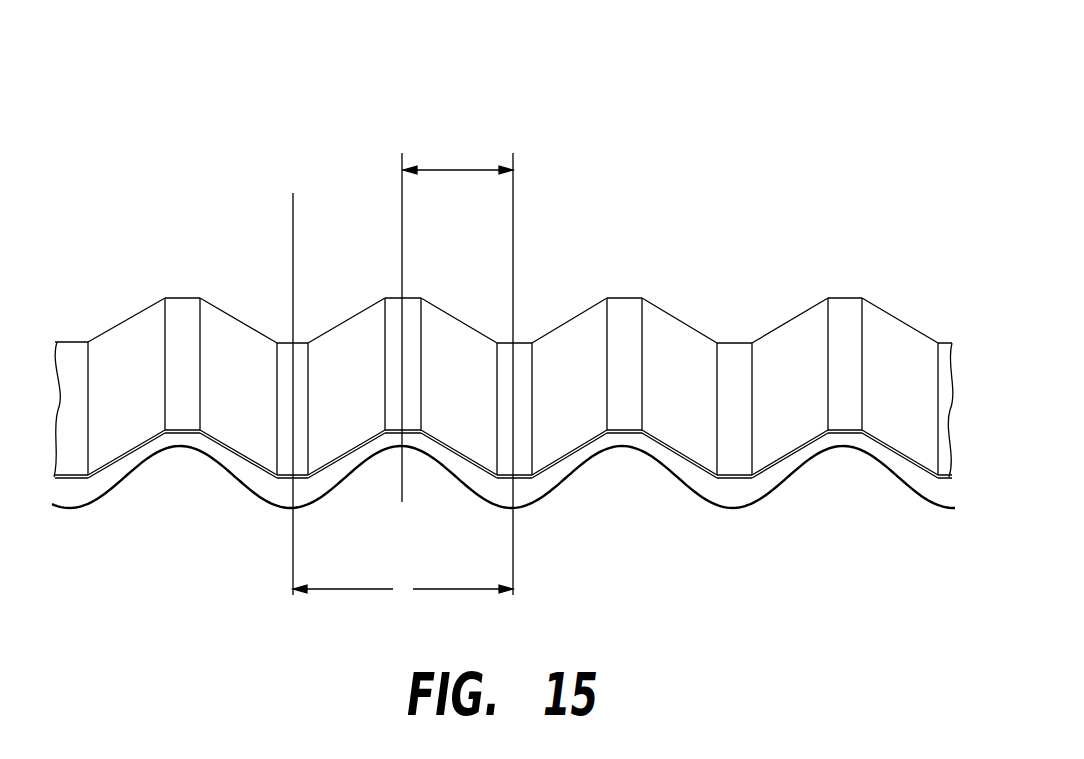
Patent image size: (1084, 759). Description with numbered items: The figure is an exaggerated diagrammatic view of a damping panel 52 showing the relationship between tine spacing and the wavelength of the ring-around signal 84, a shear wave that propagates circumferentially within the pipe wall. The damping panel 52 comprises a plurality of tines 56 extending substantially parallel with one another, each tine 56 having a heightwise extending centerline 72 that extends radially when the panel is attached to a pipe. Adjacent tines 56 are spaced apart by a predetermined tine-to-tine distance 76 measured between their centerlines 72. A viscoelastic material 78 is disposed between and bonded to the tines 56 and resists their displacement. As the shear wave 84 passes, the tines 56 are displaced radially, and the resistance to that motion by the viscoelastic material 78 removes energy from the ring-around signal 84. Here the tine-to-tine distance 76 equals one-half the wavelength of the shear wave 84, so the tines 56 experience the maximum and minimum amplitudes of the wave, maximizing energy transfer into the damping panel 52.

The damping panel 52 is at (707, 98).
The tine 56 is at (66, 342).
The heightwise extending centerline 72 is at (402, 187).
The tine-to-tine distance 76 is at (482, 168).
The viscoelastic material 78 is at (122, 313).
The ring-around signal 84 is at (237, 482).